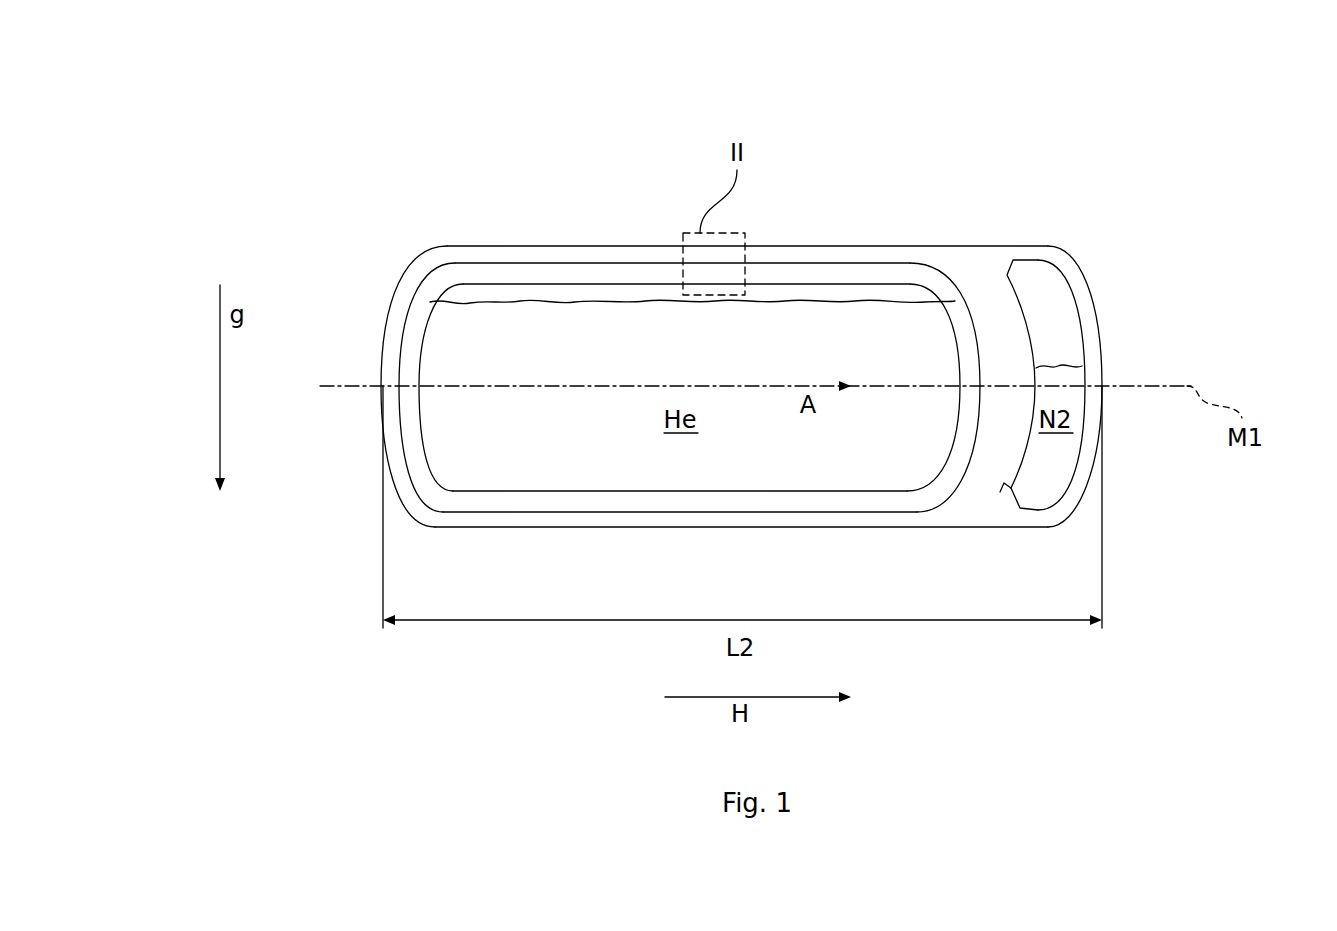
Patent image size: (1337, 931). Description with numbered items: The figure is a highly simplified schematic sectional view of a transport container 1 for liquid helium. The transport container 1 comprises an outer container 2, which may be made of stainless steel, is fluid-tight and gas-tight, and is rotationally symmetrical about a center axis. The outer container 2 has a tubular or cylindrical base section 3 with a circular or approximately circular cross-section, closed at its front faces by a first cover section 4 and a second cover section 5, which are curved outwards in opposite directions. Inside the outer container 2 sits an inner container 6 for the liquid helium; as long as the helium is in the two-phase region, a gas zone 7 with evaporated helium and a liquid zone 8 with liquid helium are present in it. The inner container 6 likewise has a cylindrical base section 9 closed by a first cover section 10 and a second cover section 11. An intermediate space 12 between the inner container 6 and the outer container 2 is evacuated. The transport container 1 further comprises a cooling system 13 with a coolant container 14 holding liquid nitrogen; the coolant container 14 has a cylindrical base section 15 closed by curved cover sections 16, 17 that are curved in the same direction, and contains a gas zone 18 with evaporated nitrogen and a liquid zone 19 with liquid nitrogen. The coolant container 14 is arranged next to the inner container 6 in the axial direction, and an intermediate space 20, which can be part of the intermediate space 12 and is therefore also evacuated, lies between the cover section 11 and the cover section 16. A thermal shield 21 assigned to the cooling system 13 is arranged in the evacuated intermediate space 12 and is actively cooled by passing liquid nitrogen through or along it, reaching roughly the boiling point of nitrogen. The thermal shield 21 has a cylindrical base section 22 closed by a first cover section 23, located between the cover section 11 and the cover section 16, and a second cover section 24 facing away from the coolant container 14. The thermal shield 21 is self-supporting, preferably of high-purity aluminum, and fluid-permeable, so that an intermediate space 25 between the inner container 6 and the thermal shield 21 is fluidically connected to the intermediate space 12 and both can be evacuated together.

The transport container 1 is at (665, 142).
The outer container 2 is at (886, 236).
The base section 3 is at (865, 246).
The first cover section 4 is at (387, 318).
The second cover section 5 is at (1100, 335).
The inner container 6 is at (650, 502).
The gas zone 7 is at (529, 288).
The liquid zone 8 is at (463, 475).
The base section 9 is at (579, 282).
The first cover section 10 is at (423, 327).
The second cover section 11 is at (963, 307).
The intermediate space 12 is at (767, 518).
The cooling system 13 is at (1098, 428).
The coolant container 14 is at (1098, 404).
The base section 15 is at (1020, 513).
The cover section 16 is at (1003, 482).
The cover section 17 is at (1067, 478).
The gas zone 18 is at (1057, 317).
The liquid zone 19 is at (1063, 463).
The intermediate space 20 is at (1005, 330).
The thermal shield 21 is at (767, 252).
The base section 22 is at (661, 262).
The first cover section 23 is at (978, 305).
The second cover section 24 is at (397, 365).
The intermediate space 25 is at (522, 502).